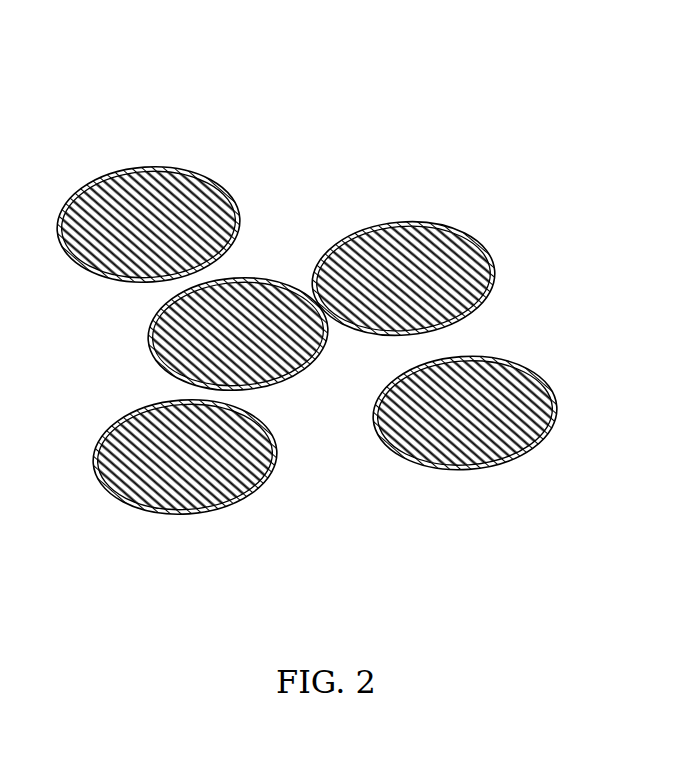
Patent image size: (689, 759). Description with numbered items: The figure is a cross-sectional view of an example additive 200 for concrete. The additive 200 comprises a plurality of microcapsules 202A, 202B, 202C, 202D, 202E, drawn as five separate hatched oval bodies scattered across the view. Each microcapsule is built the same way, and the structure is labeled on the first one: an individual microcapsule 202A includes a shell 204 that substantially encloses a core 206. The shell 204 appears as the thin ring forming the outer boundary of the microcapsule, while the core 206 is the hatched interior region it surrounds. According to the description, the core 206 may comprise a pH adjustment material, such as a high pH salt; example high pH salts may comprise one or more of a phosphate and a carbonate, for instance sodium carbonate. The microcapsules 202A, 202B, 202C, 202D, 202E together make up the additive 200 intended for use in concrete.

The additive 200 is at (498, 133).
The microcapsule 202A is at (184, 187).
The microcapsule 202B is at (452, 248).
The microcapsule 202C is at (162, 338).
The microcapsule 202D is at (512, 383).
The microcapsule 202E is at (243, 483).
The shell 204 is at (96, 183).
The core 206 is at (127, 223).